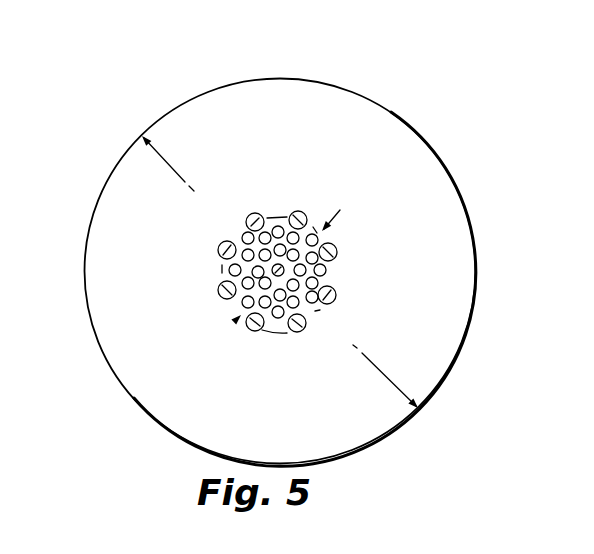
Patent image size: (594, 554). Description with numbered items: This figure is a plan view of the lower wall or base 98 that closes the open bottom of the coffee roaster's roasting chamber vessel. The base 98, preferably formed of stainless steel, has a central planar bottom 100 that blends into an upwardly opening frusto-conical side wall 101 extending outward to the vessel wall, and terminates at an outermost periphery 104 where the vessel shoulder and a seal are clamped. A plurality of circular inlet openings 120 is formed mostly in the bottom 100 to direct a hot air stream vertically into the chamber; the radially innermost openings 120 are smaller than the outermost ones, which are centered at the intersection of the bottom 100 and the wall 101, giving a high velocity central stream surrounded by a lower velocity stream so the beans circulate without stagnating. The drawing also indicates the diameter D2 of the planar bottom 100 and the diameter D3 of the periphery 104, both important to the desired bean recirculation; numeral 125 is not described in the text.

The lower wall or base 98 is at (108, 176).
The planar bottom 100 is at (278, 327).
The frusto-conical side wall 101 is at (197, 402).
The outermost periphery 104 is at (137, 403).
The inlet openings 120 is at (220, 244).
The central optical fiber 125 is at (272, 274).
The diameter of the planar bottom D2 is at (236, 319).
The diameter of the periphery D3 is at (372, 361).